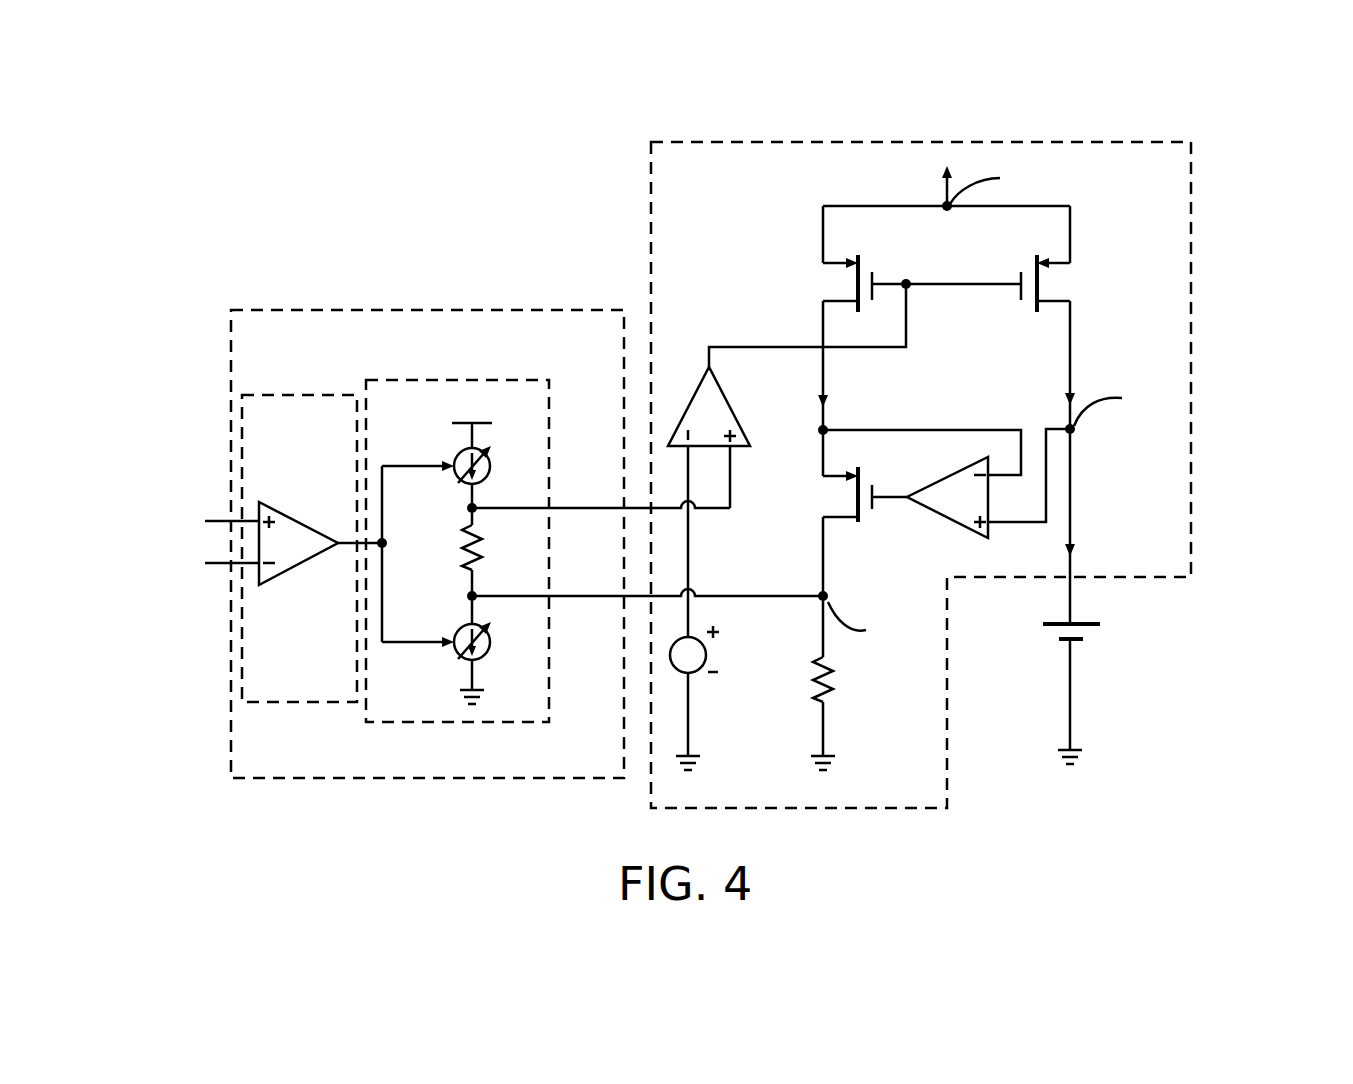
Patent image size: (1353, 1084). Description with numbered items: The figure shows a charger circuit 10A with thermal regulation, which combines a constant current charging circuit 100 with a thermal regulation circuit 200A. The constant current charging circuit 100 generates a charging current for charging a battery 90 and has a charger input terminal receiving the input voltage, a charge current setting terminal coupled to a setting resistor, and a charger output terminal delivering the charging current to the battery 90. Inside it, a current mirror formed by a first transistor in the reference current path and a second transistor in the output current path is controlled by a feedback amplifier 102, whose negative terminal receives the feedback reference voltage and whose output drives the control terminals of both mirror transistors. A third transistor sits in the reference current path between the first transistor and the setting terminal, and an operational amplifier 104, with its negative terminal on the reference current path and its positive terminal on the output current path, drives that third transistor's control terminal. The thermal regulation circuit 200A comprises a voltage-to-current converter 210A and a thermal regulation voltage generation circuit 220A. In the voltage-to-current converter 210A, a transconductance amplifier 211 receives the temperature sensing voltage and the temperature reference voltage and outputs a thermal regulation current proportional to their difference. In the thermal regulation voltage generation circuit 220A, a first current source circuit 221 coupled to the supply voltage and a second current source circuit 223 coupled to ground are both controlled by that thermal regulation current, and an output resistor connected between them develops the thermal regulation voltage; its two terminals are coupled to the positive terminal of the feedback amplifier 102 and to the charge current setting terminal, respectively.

The charger circuit 10A is at (1208, 148).
The constant current charging circuit 100 is at (826, 142).
The thermal regulation circuit 200A is at (402, 310).
The voltage-to-current converter 210A is at (298, 395).
The transconductance amplifier 211 is at (281, 512).
The thermal regulation voltage generation circuit 220A is at (456, 380).
The first current source circuit 221 is at (492, 447).
The second current source circuit 223 is at (492, 622).
The feedback amplifier 102 is at (727, 408).
The operational amplifier 104 is at (946, 522).
The battery 90 is at (1084, 622).